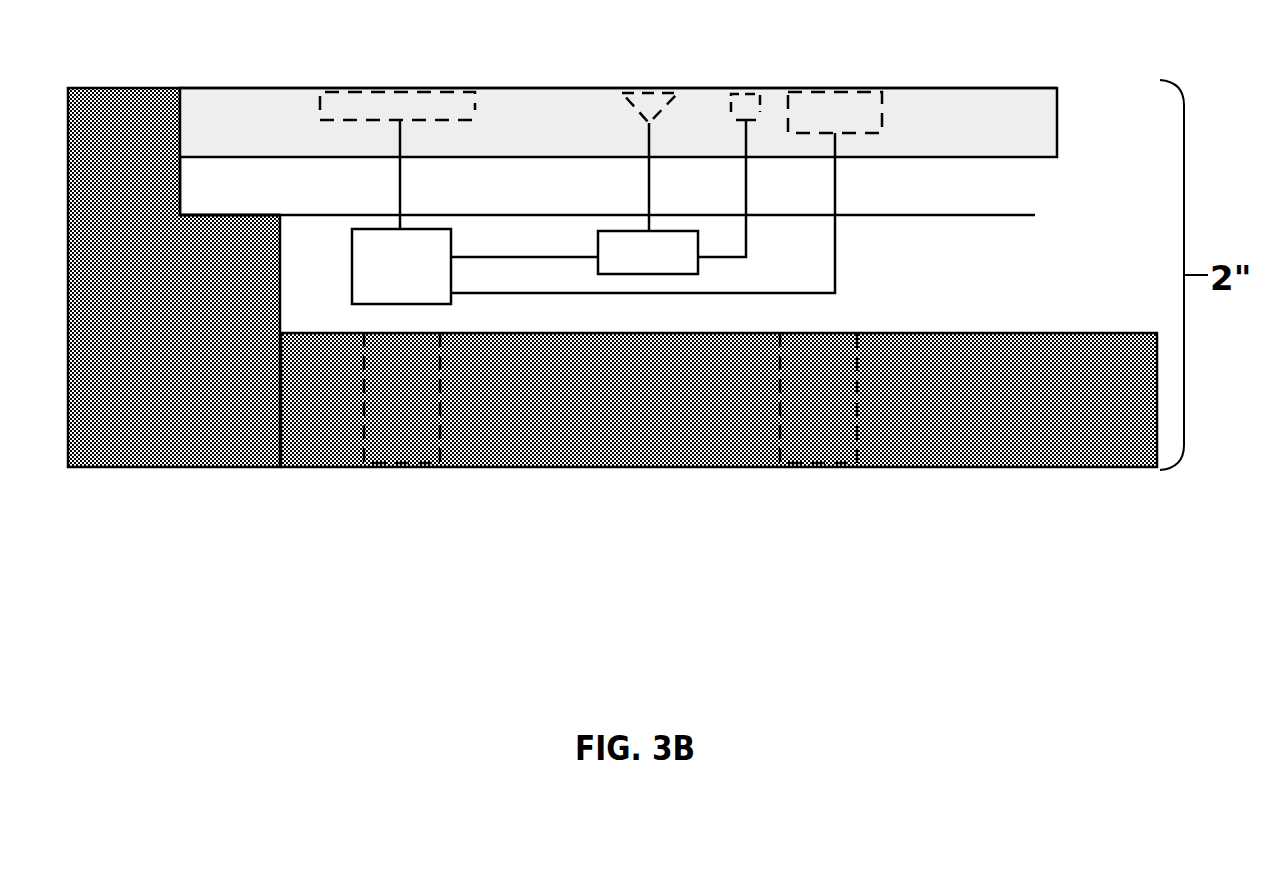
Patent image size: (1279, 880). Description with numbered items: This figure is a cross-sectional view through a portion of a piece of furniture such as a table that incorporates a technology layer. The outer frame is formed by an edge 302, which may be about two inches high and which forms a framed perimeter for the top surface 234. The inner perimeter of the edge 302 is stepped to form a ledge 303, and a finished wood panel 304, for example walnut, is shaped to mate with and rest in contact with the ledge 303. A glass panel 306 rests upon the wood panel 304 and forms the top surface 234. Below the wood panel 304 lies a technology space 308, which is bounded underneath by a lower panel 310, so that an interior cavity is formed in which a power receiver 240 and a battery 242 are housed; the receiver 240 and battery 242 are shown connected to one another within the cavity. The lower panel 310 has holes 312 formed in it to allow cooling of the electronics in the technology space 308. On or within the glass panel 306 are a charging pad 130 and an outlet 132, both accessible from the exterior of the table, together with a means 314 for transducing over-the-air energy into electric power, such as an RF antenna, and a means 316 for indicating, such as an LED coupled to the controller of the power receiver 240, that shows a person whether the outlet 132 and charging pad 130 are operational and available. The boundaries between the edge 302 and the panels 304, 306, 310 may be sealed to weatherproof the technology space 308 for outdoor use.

The edge 302 is at (52, 112).
The ledge 303 is at (192, 190).
The glass panel 306 is at (618, 122).
The top surface 234 is at (922, 72).
The finished wood panel 304 is at (607, 193).
The technology space 308 is at (657, 274).
The lower panel 310 is at (719, 400).
The holes 312 is at (400, 482).
The charging pad 130 is at (399, 74).
The means for transducing over-the-air energy to electric power 314 is at (643, 76).
The means for indicating 316 is at (742, 74).
The outlet 132 is at (828, 74).
The battery 242 is at (475, 266).
The power receiver 240 is at (648, 252).